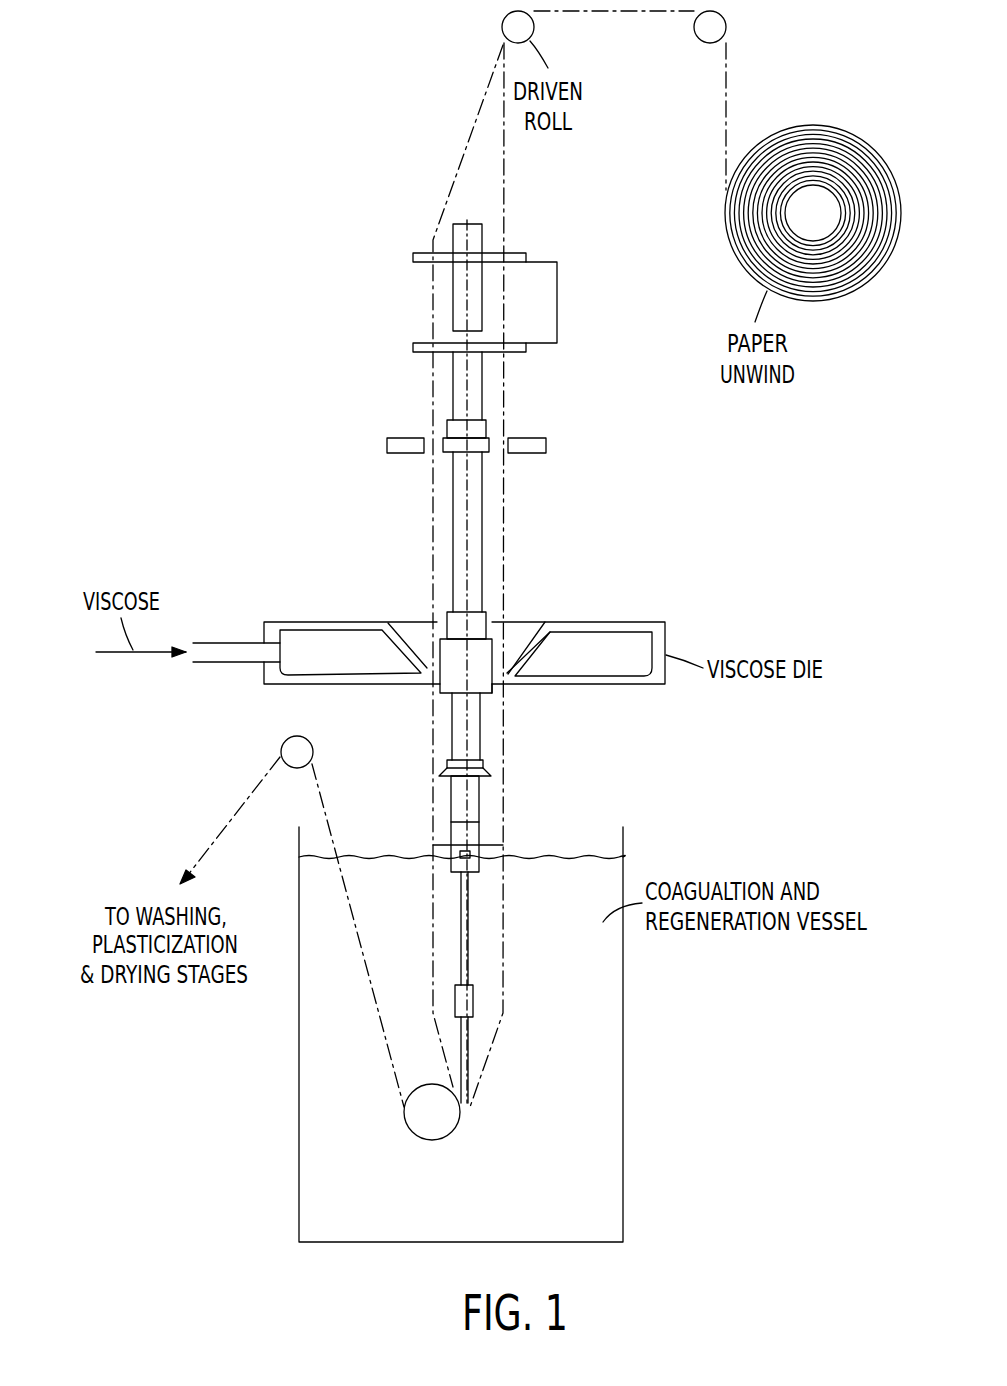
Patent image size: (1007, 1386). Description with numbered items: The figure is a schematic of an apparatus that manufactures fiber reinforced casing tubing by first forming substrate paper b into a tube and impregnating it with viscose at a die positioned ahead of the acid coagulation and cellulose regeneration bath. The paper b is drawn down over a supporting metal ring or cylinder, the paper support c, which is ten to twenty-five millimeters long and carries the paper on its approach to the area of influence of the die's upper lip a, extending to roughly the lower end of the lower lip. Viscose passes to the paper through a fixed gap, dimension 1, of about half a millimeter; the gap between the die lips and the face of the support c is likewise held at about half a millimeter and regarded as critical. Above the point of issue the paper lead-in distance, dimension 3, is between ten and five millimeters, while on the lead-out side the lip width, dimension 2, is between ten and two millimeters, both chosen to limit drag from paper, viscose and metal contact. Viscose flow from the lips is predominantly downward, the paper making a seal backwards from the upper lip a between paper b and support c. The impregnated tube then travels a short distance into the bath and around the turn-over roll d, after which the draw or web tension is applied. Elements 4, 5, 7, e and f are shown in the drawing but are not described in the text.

The viscose gap dimension 1 is at (517, 672).
The lip width dimension 2 is at (493, 682).
The paper lead-in distance 3 is at (510, 655).
The die spindle block 4 is at (430, 684).
The mandrel shaft 5 is at (440, 648).
The mandrel support arms 7 is at (387, 448).
The die upper lip a is at (395, 640).
The paper b is at (430, 515).
The paper support ring c is at (447, 637).
The turn-over roll d is at (425, 1125).
The coagulation and regeneration vessel e is at (625, 958).
The formed casing tube f is at (460, 1108).